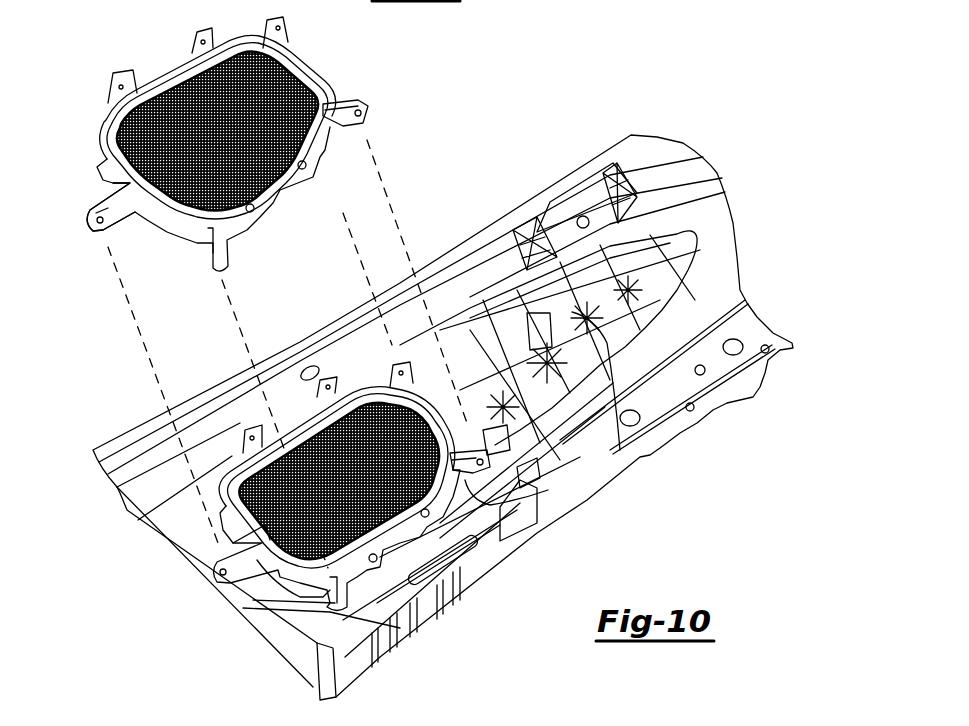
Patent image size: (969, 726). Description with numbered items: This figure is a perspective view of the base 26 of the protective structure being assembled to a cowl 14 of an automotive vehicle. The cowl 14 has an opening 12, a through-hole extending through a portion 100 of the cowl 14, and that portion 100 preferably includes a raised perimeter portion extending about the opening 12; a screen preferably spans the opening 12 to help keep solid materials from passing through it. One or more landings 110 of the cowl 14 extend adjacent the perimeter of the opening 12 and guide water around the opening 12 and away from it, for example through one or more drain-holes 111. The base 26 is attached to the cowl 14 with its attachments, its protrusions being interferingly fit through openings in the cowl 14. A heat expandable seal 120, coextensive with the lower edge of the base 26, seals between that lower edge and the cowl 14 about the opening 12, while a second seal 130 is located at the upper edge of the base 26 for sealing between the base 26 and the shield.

The cowl 14 is at (753, 404).
The portion 100 is at (183, 528).
The landings 110 is at (358, 378).
The drain-holes 111 is at (465, 586).
The opening 12 is at (240, 447).
The seal 130 is at (110, 137).
The base 26 is at (330, 102).
The seal 120 is at (200, 246).